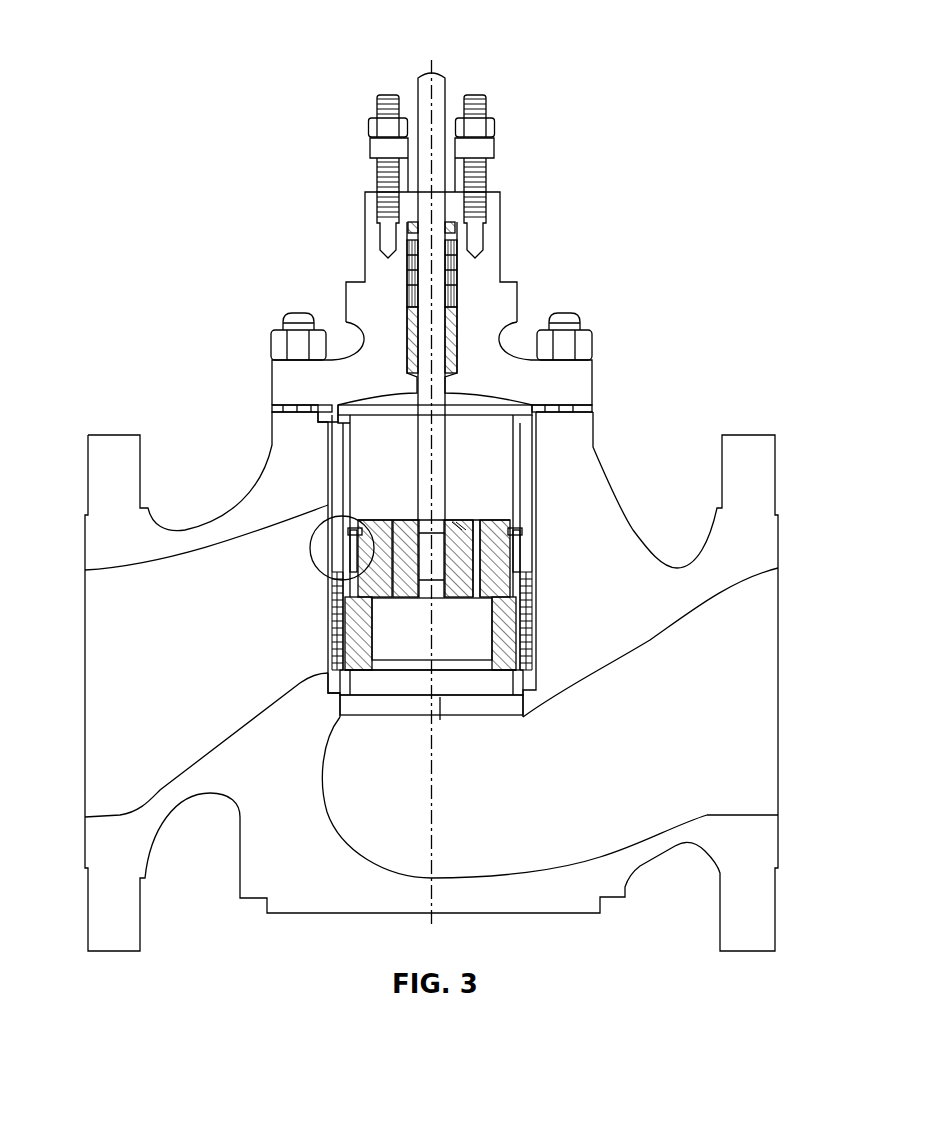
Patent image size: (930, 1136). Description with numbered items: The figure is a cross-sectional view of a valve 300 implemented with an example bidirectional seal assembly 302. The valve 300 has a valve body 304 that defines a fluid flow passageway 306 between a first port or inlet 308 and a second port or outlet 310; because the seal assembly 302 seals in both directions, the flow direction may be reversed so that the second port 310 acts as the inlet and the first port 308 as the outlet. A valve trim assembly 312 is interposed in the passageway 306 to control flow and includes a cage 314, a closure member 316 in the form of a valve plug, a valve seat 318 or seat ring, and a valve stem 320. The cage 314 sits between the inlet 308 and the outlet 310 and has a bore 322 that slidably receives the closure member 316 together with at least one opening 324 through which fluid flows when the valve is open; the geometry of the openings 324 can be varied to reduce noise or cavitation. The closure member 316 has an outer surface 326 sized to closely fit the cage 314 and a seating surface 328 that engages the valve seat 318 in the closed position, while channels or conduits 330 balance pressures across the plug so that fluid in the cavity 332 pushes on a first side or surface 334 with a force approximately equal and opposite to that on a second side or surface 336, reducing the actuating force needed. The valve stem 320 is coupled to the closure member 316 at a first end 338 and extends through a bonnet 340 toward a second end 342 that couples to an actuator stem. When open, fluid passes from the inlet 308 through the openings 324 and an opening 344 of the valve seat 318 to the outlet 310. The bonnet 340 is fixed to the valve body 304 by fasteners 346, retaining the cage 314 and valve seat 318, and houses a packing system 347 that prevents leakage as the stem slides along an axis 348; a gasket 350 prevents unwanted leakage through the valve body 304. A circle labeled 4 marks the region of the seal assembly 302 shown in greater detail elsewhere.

The valve 300 is at (199, 47).
The bidirectional seal assembly 302 is at (524, 548).
The valve body 304 is at (272, 912).
The fluid flow passageway 306 is at (550, 797).
The inlet 308 is at (86, 735).
The outlet 310 is at (778, 705).
The valve trim assembly 312 is at (495, 487).
The cage 314 is at (535, 487).
The closure member 316 is at (490, 652).
The valve seat 318 is at (325, 677).
The valve stem 320 is at (393, 520).
The bore 322 is at (593, 432).
The opening 324 is at (332, 612).
The outer surface 326 is at (476, 638).
The seating surface 328 is at (527, 695).
The channels or conduits 330 is at (355, 530).
The cavity 332 is at (434, 485).
The first side or surface 334 is at (362, 505).
The second side or surface 336 is at (332, 657).
The first end 338 is at (515, 524).
The bonnet 340 is at (365, 270).
The second end 342 is at (418, 85).
The opening 344 is at (440, 720).
The fasteners 346 is at (298, 313).
The packing system 347 is at (457, 305).
The axis 348 is at (428, 447).
The gasket 350 is at (333, 422).
The detail circle 4 is at (310, 550).